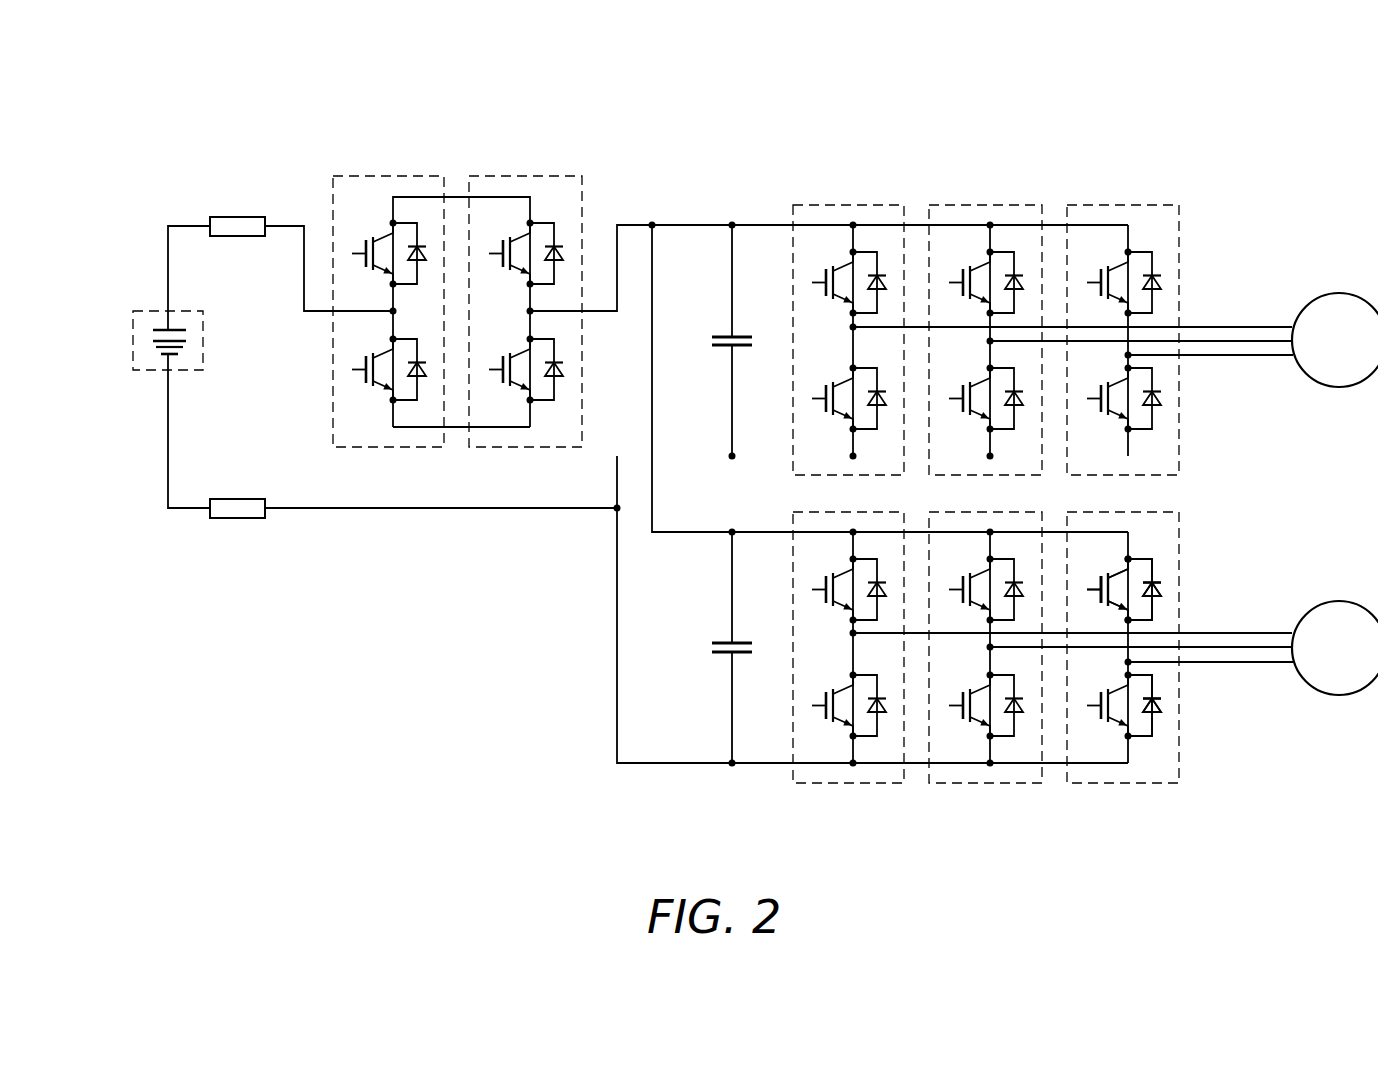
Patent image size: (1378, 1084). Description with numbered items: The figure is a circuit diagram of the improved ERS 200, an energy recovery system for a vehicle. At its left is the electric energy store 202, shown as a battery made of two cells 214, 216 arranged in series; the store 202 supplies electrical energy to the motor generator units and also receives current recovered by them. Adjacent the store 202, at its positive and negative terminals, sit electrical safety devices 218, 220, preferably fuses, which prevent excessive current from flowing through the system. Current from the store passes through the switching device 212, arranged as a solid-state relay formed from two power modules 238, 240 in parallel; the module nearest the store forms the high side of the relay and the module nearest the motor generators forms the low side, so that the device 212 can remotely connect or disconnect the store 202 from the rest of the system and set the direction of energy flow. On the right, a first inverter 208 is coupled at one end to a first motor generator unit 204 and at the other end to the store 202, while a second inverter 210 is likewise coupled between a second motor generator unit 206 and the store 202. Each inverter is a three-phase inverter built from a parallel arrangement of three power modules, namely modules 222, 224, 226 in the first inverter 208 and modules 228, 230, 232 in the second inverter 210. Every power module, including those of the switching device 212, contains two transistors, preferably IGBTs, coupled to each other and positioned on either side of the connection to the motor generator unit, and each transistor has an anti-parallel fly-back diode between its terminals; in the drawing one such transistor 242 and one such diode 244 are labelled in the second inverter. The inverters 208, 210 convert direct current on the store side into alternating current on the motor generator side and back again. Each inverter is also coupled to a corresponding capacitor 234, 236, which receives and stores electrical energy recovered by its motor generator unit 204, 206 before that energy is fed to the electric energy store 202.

The improved ERS 200 is at (316, 682).
The electric energy store 202 is at (133, 344).
The first motor generator unit 204 is at (1337, 293).
The second motor generator unit 206 is at (1337, 601).
The first inverter 208 is at (1178, 137).
The second inverter 210 is at (1178, 852).
The switching device 212 is at (333, 107).
The first cell 214 is at (160, 328).
The second cell 216 is at (162, 356).
The first electrical safety device 218 is at (236, 217).
The second electrical safety device 220 is at (237, 519).
The first power module of the first inverter 222 is at (865, 205).
The second power module of the first inverter 224 is at (1004, 205).
The third power module of the first inverter 226 is at (1140, 205).
The first power module of the second inverter 228 is at (869, 785).
The second power module of the second inverter 230 is at (1006, 785).
The third power module of the second inverter 232 is at (1144, 785).
The first capacitor 234 is at (722, 337).
The second capacitor 236 is at (712, 645).
The first power module of the switching device 238 is at (405, 175).
The second power module of the switching device 240 is at (545, 175).
The switching transistor 242 is at (1116, 574).
The freewheeling diode 244 is at (1152, 727).